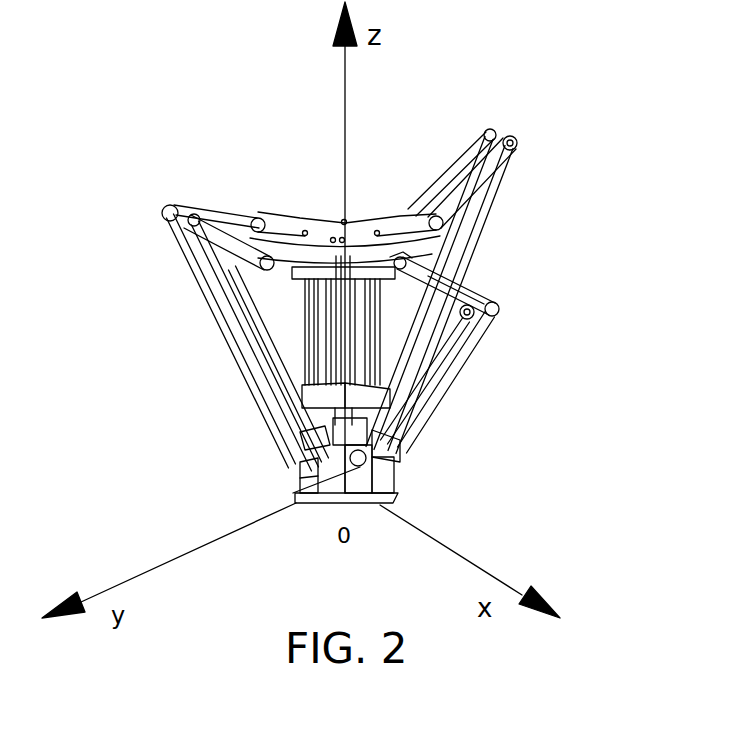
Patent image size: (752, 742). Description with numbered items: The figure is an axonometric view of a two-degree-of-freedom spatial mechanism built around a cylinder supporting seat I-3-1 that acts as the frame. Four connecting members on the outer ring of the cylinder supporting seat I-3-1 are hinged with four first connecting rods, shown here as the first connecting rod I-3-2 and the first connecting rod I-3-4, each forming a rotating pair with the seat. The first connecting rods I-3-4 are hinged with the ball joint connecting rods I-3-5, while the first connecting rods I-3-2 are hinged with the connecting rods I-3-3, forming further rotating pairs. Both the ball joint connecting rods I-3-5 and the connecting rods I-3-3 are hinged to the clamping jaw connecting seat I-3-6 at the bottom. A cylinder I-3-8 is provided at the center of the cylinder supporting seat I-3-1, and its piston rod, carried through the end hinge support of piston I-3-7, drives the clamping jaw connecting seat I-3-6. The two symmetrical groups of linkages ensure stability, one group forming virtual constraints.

The cylinder supporting seat I-3-1 is at (250, 186).
The first connecting rod I-3-2 is at (431, 165).
The connecting rod I-3-3 is at (562, 130).
The first connecting rod I-3-4 is at (517, 273).
The ball joint connecting rod I-3-5 is at (511, 382).
The clamping jaw connecting seat I-3-6 is at (469, 502).
The end hinge support of piston I-3-7 is at (187, 502).
The cylinder I-3-8 is at (228, 374).